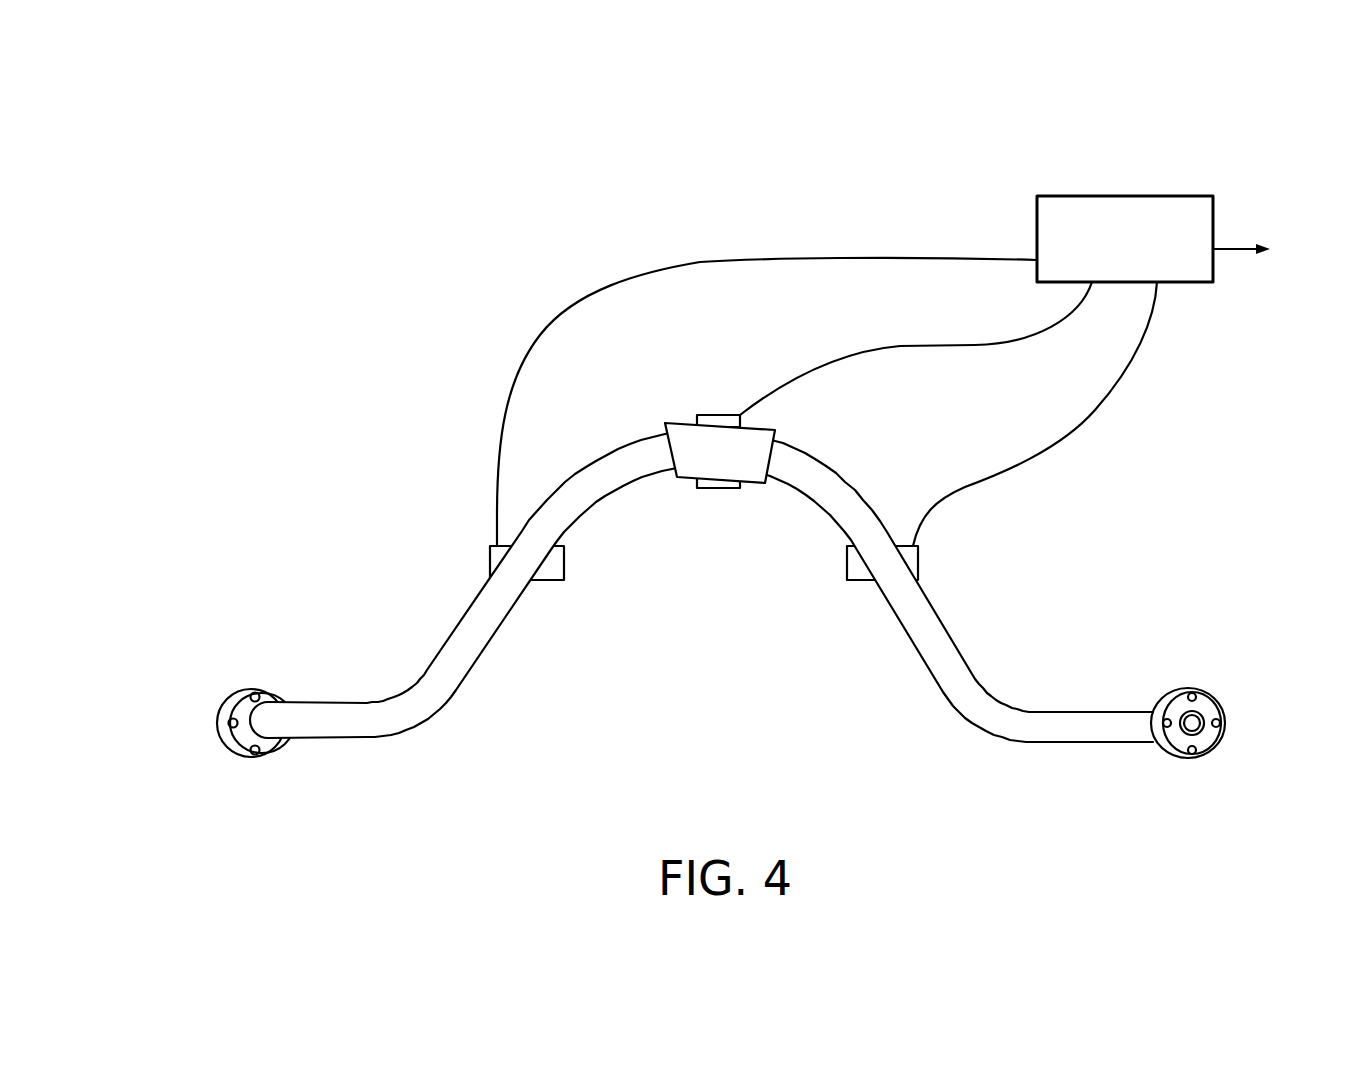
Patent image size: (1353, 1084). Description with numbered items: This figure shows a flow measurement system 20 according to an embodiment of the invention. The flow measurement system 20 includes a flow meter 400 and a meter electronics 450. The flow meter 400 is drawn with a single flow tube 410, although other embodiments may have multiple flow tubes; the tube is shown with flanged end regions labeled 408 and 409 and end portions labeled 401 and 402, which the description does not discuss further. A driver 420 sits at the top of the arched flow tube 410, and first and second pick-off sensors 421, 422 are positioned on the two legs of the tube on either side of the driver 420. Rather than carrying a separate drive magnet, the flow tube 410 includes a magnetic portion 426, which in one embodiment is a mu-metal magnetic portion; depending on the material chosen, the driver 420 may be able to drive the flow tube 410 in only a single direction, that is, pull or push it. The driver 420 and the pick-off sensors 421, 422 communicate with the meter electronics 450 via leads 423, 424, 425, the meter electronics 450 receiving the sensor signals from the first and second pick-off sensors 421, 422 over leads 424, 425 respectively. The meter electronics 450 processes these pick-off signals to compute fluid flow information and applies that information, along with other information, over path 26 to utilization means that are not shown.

The flow measurement system 20 is at (706, 133).
The path 26 is at (1257, 248).
The flow meter 400 is at (410, 419).
The inlet end 401 is at (292, 740).
The outlet end 402 is at (1150, 752).
The inlet flange 408 is at (216, 725).
The outlet flange 409 is at (1213, 752).
The flow tube 410 is at (885, 528).
The driver 420 is at (708, 490).
The first pick-off sensor 421 is at (565, 580).
The second pick-off sensor 422 is at (918, 580).
The lead 423 is at (912, 346).
The lead 424 is at (670, 268).
The lead 425 is at (1057, 444).
The magnetic portion 426 is at (780, 437).
The meter electronics 450 is at (1215, 237).